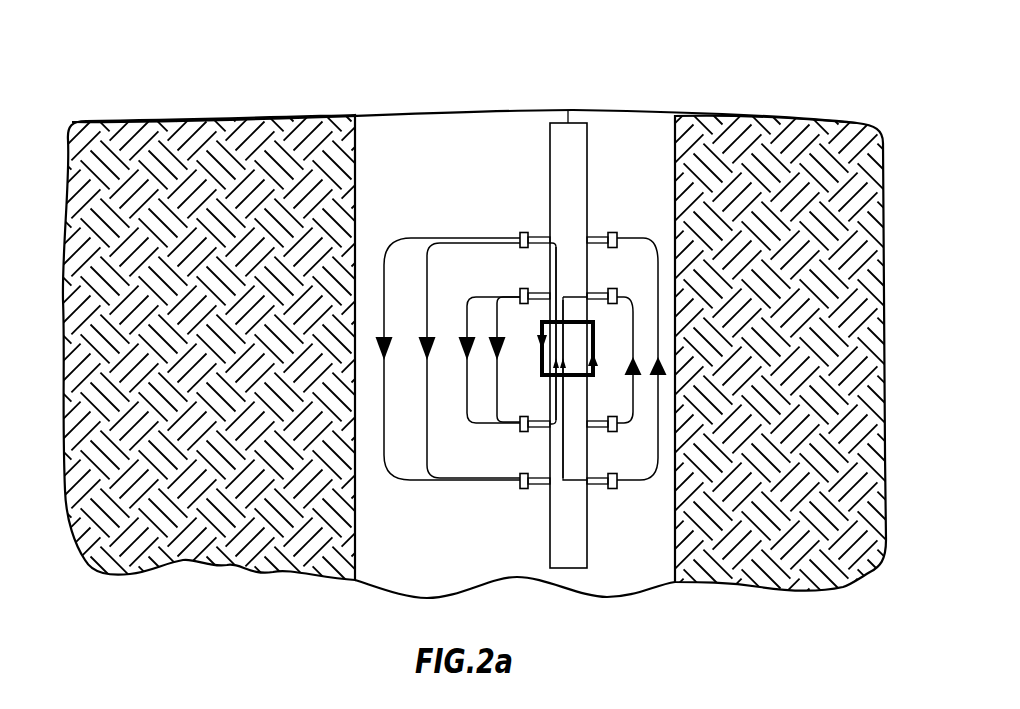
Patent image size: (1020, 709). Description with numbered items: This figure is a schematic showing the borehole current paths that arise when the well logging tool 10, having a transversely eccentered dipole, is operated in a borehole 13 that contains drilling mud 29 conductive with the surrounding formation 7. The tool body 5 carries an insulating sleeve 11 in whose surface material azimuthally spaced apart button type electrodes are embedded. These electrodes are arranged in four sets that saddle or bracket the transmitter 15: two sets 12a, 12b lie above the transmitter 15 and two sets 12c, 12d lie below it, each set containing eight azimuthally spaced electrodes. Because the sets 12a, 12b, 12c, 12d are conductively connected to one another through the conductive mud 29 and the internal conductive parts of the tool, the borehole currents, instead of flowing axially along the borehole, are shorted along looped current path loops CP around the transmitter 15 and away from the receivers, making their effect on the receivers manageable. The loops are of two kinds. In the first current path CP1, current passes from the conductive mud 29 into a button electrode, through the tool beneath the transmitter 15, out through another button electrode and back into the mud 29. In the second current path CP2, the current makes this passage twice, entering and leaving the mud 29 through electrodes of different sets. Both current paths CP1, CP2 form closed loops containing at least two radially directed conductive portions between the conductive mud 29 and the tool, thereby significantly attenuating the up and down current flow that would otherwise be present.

The well logging tool 10 is at (524, 92).
The insulating sleeve 11 is at (606, 143).
The borehole 13 is at (426, 183).
The drilling mud 29 is at (421, 570).
The formation 7 is at (263, 555).
The drill pipe 5 is at (568, 560).
The set of button electrodes 12a is at (615, 290).
The set of button electrodes 12b is at (615, 233).
The set of button electrodes 12c is at (617, 424).
The set of button electrodes 12d is at (617, 481).
The transmitter 15 is at (610, 333).
The current path loops CP is at (467, 297).
The first current path CP1 is at (560, 452).
The second current path CP2 is at (573, 482).